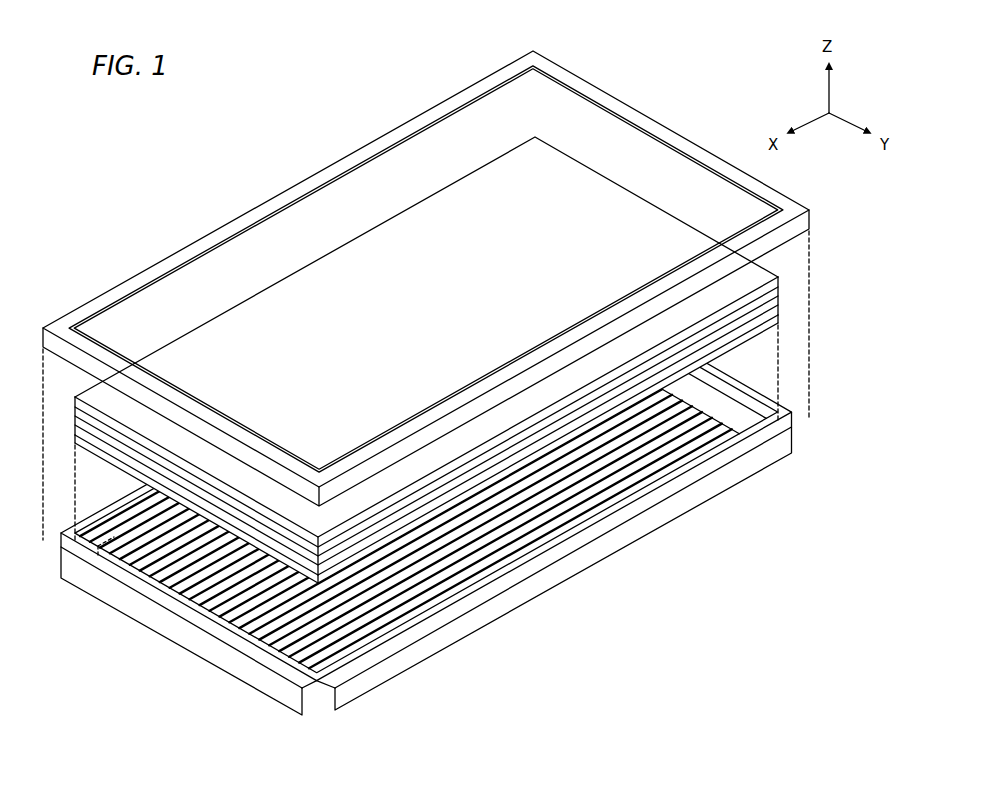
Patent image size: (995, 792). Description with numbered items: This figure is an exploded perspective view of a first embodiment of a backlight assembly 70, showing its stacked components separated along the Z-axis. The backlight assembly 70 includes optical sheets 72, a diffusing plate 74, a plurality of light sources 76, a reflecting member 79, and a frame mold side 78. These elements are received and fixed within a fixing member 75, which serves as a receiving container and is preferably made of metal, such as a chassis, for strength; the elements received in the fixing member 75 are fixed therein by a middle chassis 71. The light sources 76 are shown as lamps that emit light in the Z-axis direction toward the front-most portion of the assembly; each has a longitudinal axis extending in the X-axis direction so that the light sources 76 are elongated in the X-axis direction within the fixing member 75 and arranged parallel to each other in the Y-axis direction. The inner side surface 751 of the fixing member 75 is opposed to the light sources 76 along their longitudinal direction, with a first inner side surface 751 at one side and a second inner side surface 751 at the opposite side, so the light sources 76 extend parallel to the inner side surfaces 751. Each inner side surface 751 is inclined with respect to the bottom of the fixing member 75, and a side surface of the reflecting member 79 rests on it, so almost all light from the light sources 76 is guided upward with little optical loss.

The backlight assembly 70 is at (300, 127).
The middle chassis 71 is at (811, 216).
The optical sheets 72 is at (783, 277).
The diffusing plate 74 is at (779, 318).
The fixing member 75 is at (438, 502).
The inner side surface 751 is at (93, 549).
The light sources 76 is at (576, 497).
The frame mold side 78 is at (743, 428).
The reflecting member 79 is at (630, 513).